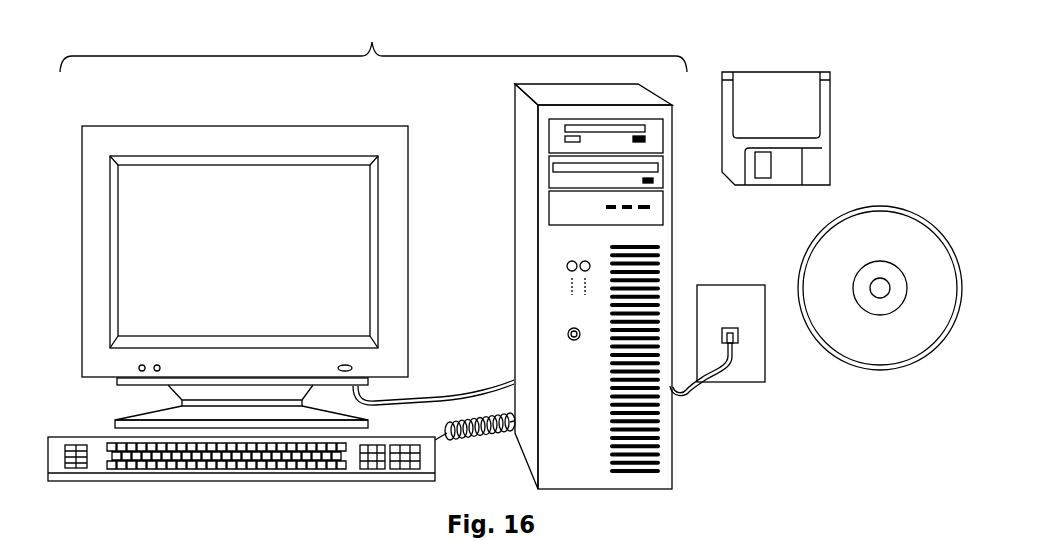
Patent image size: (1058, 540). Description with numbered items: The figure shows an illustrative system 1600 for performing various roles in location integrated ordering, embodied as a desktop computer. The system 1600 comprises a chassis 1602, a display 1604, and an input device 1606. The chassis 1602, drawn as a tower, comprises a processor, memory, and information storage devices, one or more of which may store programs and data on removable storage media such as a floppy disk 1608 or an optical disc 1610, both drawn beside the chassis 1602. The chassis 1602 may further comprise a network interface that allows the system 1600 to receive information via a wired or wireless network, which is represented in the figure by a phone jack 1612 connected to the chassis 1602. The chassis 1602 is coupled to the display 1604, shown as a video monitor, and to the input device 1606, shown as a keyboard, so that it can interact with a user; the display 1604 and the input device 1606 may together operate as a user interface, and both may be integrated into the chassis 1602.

The system 1600 is at (373, 42).
The chassis 1602 is at (520, 330).
The display 1604 is at (103, 378).
The input device 1606 is at (93, 483).
The floppy disk 1608 is at (832, 150).
The optical disc 1610 is at (927, 202).
The phone jack 1612 is at (734, 285).